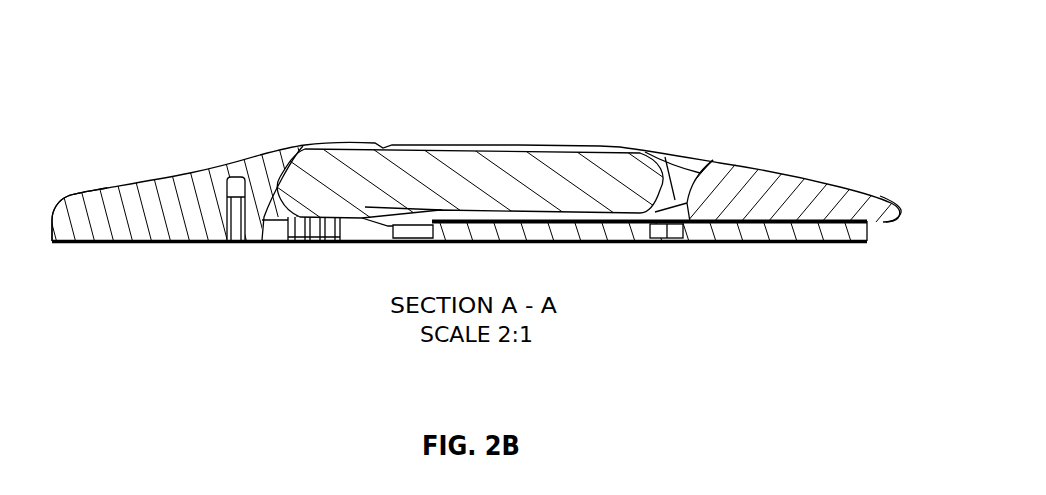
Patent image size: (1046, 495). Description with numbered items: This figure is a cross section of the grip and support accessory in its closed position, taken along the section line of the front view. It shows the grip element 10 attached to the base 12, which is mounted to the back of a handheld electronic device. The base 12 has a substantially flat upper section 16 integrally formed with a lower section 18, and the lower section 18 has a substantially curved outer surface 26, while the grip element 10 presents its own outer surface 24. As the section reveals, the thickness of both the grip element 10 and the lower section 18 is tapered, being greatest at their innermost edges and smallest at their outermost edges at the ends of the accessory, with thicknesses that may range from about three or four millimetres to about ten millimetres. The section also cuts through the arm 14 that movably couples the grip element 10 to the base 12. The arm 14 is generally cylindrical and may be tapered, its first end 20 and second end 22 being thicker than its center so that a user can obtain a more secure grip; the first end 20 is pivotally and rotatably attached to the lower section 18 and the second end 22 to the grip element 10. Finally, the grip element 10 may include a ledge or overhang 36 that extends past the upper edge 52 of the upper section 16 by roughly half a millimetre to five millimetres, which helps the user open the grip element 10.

The grip element 10 is at (498, 179).
The base 12 is at (167, 125).
The arm 14 is at (437, 175).
The upper section 16 is at (825, 240).
The lower section 18 is at (80, 198).
The first end 20 is at (302, 150).
The second end 22 is at (627, 152).
The outer surface 24 is at (730, 162).
The outer surface 26 is at (220, 163).
The overhang 36 is at (898, 208).
The upper edge 52 is at (868, 237).